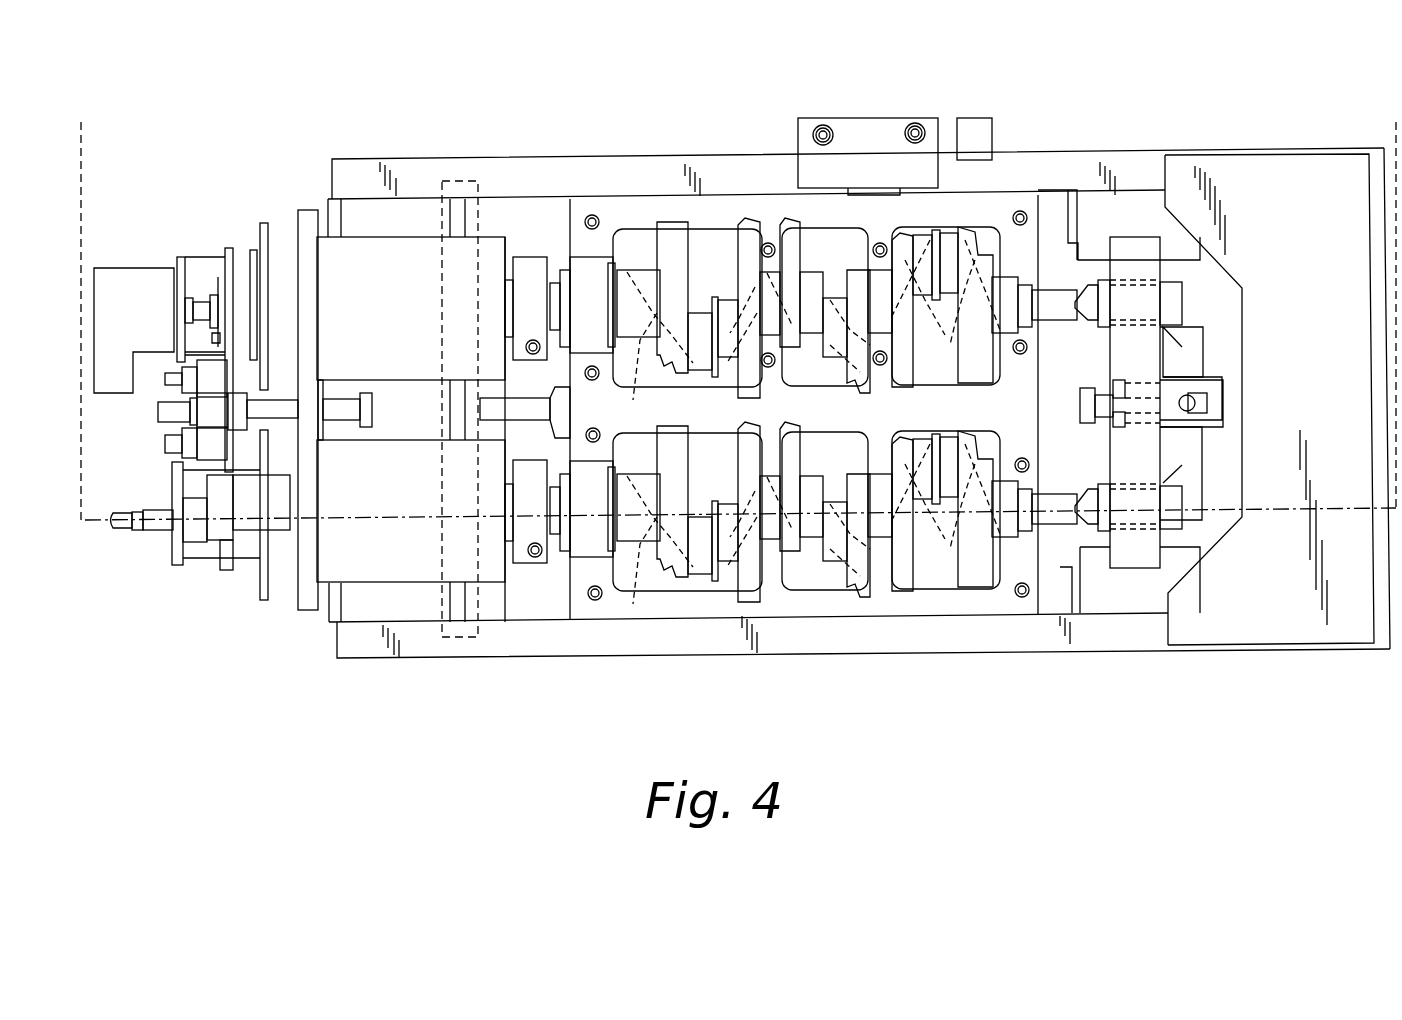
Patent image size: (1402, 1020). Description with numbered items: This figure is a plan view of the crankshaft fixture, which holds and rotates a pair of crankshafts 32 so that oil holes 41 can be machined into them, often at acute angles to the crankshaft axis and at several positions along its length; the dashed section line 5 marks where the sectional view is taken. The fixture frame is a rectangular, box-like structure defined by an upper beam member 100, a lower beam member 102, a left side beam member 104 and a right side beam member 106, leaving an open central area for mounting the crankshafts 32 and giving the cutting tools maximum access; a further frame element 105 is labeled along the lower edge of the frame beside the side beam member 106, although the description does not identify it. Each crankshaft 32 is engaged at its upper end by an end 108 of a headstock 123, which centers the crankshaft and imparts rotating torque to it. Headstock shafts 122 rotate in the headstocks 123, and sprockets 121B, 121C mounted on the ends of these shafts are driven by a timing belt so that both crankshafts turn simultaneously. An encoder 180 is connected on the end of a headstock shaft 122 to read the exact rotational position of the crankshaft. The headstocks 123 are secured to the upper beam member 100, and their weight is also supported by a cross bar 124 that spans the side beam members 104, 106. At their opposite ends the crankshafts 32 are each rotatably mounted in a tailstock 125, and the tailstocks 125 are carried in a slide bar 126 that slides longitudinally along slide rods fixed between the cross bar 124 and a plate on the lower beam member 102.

The section line 5- 5 is at (81, 106).
The crankshaft 32 is at (967, 228).
The oil holes 41 is at (742, 278).
The upper beam member 100 is at (313, 267).
The lower beam member 102 is at (1383, 650).
The left side beam member 104 is at (603, 176).
The bottom plate 105 is at (694, 612).
The right side beam member 106 is at (1003, 637).
The headstock ends 108 is at (565, 300).
The sprocket 121B is at (238, 290).
The sprocket 121C is at (247, 555).
The headstock shaft 122 is at (282, 275).
The headstock 123 is at (443, 410).
The cross bar 124 is at (455, 210).
The tailstock 125 is at (1102, 322).
The slide bar 126 is at (1142, 353).
The encoder 180 is at (148, 282).